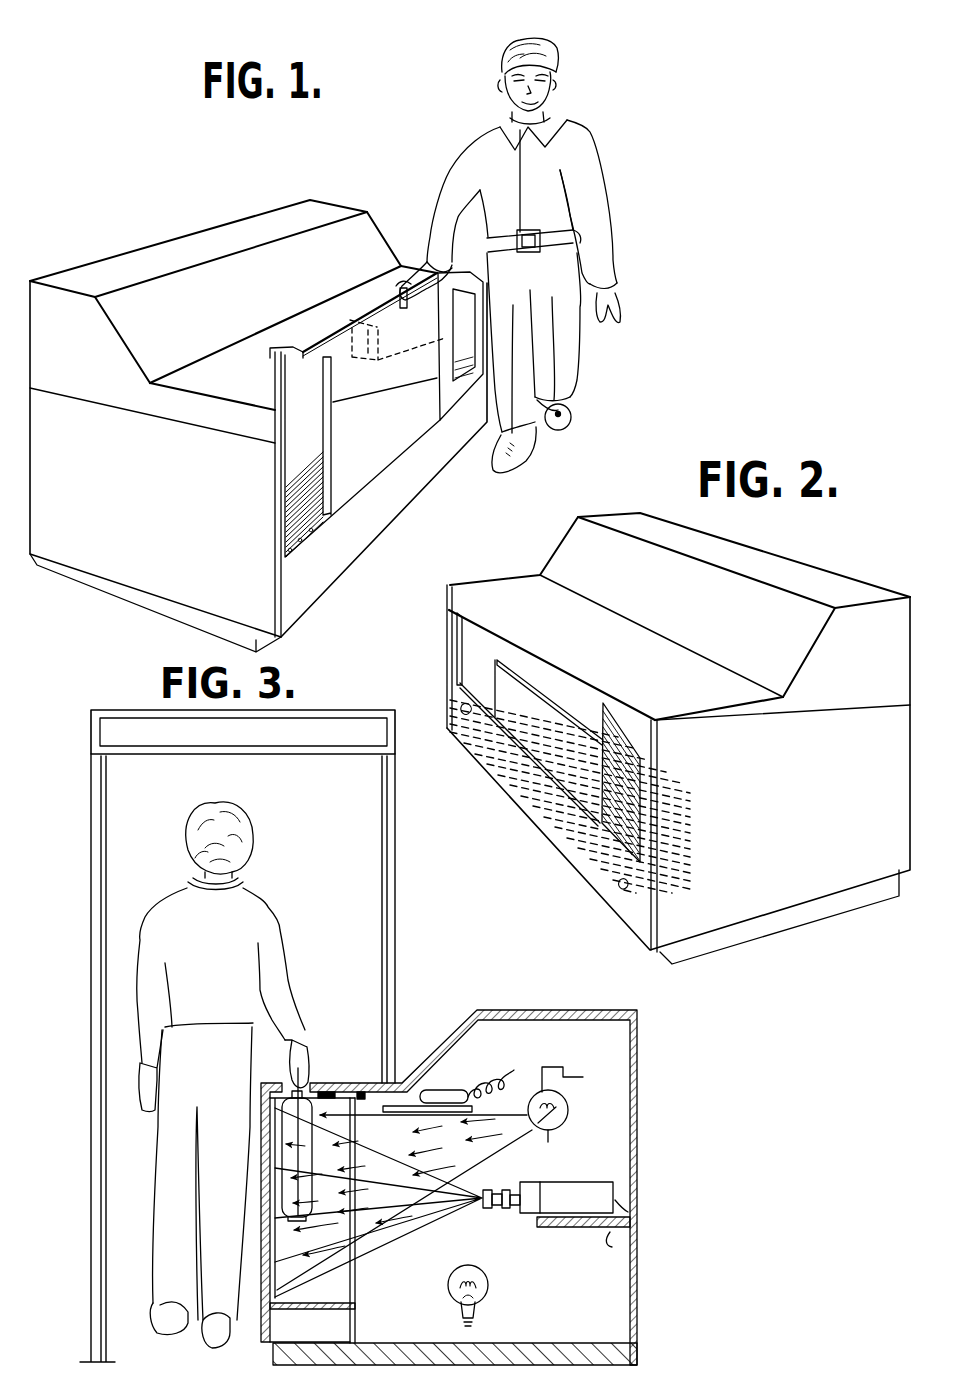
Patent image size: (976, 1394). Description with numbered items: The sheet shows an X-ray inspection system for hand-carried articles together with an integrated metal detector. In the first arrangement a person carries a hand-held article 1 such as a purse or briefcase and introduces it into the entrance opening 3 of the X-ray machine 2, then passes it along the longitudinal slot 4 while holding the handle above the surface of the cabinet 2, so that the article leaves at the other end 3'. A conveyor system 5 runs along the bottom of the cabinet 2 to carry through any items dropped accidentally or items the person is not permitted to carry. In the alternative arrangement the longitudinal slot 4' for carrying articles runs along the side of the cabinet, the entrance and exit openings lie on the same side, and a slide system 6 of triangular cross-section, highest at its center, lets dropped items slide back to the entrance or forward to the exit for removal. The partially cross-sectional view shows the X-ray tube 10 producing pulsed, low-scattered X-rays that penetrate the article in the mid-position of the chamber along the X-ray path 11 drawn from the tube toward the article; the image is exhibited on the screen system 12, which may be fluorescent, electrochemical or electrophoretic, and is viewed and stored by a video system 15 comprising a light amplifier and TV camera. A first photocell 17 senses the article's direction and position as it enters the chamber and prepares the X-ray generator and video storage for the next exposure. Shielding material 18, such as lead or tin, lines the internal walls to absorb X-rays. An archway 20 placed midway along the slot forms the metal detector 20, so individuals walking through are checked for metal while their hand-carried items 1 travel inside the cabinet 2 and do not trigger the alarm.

In FIG. 1, the hand-held article 1 is at (403, 284).
In FIG. 3, the hand-held article 1 is at (318, 1088).
In FIG. 1, the X-ray machine 2 is at (274, 210).
In FIG. 3, the X-ray machine 2 is at (547, 1010).
In FIG. 1, the entrance opening 3 is at (400, 362).
In FIG. 1, the exit opening 3' is at (337, 436).
In FIG. 1, the longitudinal slot 4 is at (370, 317).
In FIG. 2, the longitudinal slot 4' is at (531, 727).
In FIG. 1, the conveyor system 5 is at (310, 488).
In FIG. 3, the conveyor system 5 is at (297, 1310).
In FIG. 2, the slide system 6 is at (624, 727).
In FIG. 3, the X-ray tube 10 is at (570, 1107).
In FIG. 3, the light ray 11 is at (507, 1142).
In FIG. 3, the screen system 12 is at (279, 1253).
In FIG. 3, the video system 15 is at (563, 1193).
In FIG. 3, the first photocell 17 is at (467, 1090).
In FIG. 3, the shielding material 18 is at (362, 1101).
In FIG. 3, the archway 20 is at (337, 730).